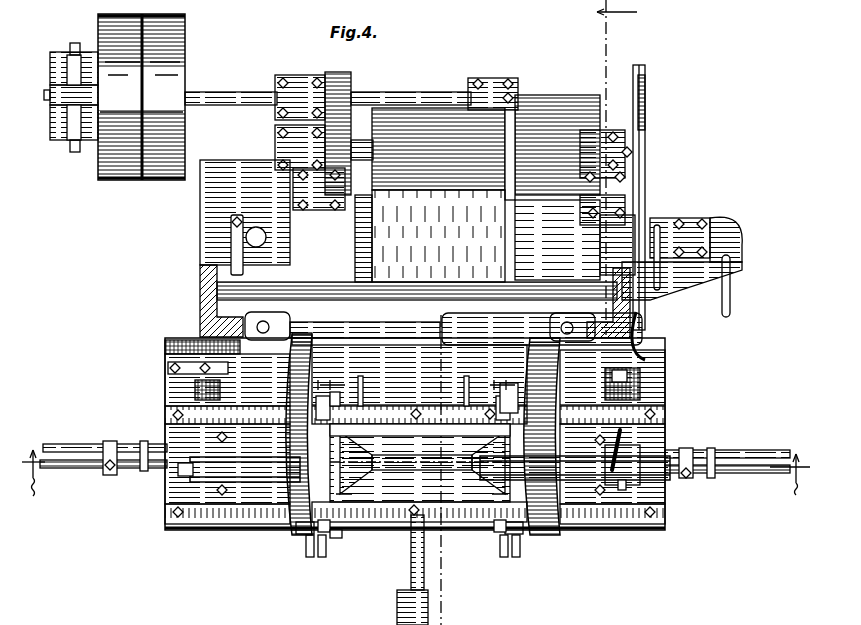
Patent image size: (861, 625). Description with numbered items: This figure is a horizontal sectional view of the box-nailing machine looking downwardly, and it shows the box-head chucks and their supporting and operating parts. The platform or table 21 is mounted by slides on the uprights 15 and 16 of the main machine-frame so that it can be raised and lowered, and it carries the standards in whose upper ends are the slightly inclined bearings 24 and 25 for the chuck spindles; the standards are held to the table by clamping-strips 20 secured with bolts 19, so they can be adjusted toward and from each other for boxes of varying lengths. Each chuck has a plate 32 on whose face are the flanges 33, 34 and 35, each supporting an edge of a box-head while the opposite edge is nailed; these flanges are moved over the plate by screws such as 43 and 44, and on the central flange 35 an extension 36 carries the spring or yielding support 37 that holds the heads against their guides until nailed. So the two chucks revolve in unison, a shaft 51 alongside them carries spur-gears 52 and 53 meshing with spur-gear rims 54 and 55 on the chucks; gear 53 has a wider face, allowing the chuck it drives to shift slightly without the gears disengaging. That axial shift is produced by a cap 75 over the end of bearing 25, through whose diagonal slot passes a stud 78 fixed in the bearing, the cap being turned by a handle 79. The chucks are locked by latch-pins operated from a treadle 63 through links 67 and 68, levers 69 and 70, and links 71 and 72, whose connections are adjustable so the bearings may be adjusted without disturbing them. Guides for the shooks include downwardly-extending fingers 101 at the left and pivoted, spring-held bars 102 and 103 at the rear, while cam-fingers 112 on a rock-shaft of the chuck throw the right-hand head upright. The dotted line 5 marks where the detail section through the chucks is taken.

The dotted line 5 5 is at (409, 473).
The upright 15 is at (205, 300).
The upright 16 is at (648, 312).
The bolt 19 is at (175, 415).
The clamping-strip 20 is at (268, 418).
The platform or table 21 is at (165, 488).
The bearing 24 is at (239, 467).
The bearing 25 is at (575, 466).
The plate 32 is at (305, 560).
The flange 33 is at (496, 398).
The flange 34 is at (345, 560).
The central flange 35 is at (420, 471).
The extension 36 is at (368, 456).
The spring or yielding support 37 is at (405, 482).
The screw 43 is at (328, 384).
The screw 44 is at (413, 557).
The shaft 51 is at (400, 378).
The spur-gear 52 is at (297, 338).
The spur-gear 53 is at (608, 377).
The spur-gear rim 54 is at (292, 532).
The spur-gear rim 55 is at (548, 540).
The treadle 63 is at (410, 560).
The link 67 is at (78, 444).
The link 68 is at (770, 451).
The lever 69 is at (70, 465).
The lever 70 is at (748, 467).
The link 71 is at (96, 473).
The link 72 is at (745, 474).
The cap 75 is at (642, 485).
The stud 78 is at (622, 492).
The handle 79 is at (626, 446).
The finger 101 is at (351, 465).
The bar 102 is at (372, 391).
The bar 103 is at (453, 391).
The cam-finger 112 is at (420, 433).